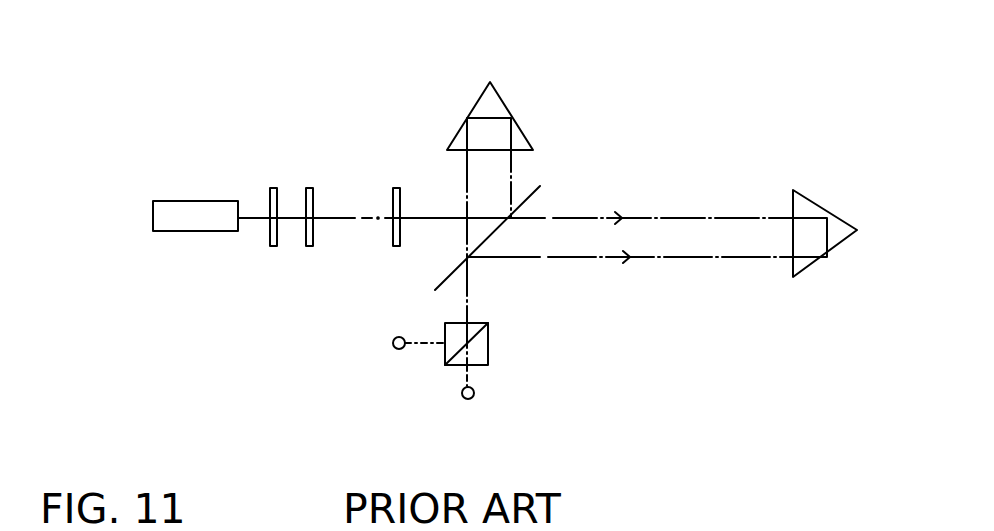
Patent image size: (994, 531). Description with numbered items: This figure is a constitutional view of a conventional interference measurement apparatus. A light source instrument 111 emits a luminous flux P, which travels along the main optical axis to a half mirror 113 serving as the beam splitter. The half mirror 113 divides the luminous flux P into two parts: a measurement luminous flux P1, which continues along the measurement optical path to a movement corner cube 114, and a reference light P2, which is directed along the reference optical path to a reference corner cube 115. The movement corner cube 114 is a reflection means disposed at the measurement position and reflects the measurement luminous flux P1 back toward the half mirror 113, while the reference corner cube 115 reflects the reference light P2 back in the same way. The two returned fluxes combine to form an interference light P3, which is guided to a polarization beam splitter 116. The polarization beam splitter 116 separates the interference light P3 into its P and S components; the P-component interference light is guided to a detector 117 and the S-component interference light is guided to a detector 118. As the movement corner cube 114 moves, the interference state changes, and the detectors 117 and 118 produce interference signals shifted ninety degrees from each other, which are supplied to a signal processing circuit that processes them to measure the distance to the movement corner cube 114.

The light source instrument 111 is at (400, 120).
The half mirror 113 is at (540, 186).
The movement corner cube 114 is at (825, 205).
The reference corner cube 115 is at (502, 104).
The polarization beam splitter 116 is at (488, 343).
The detector 117 is at (471, 399).
The detector 118 is at (396, 349).
The luminous flux P is at (427, 214).
The measurement luminous flux P1 is at (680, 210).
The reference light P2 is at (516, 173).
The interference light P3 is at (489, 292).